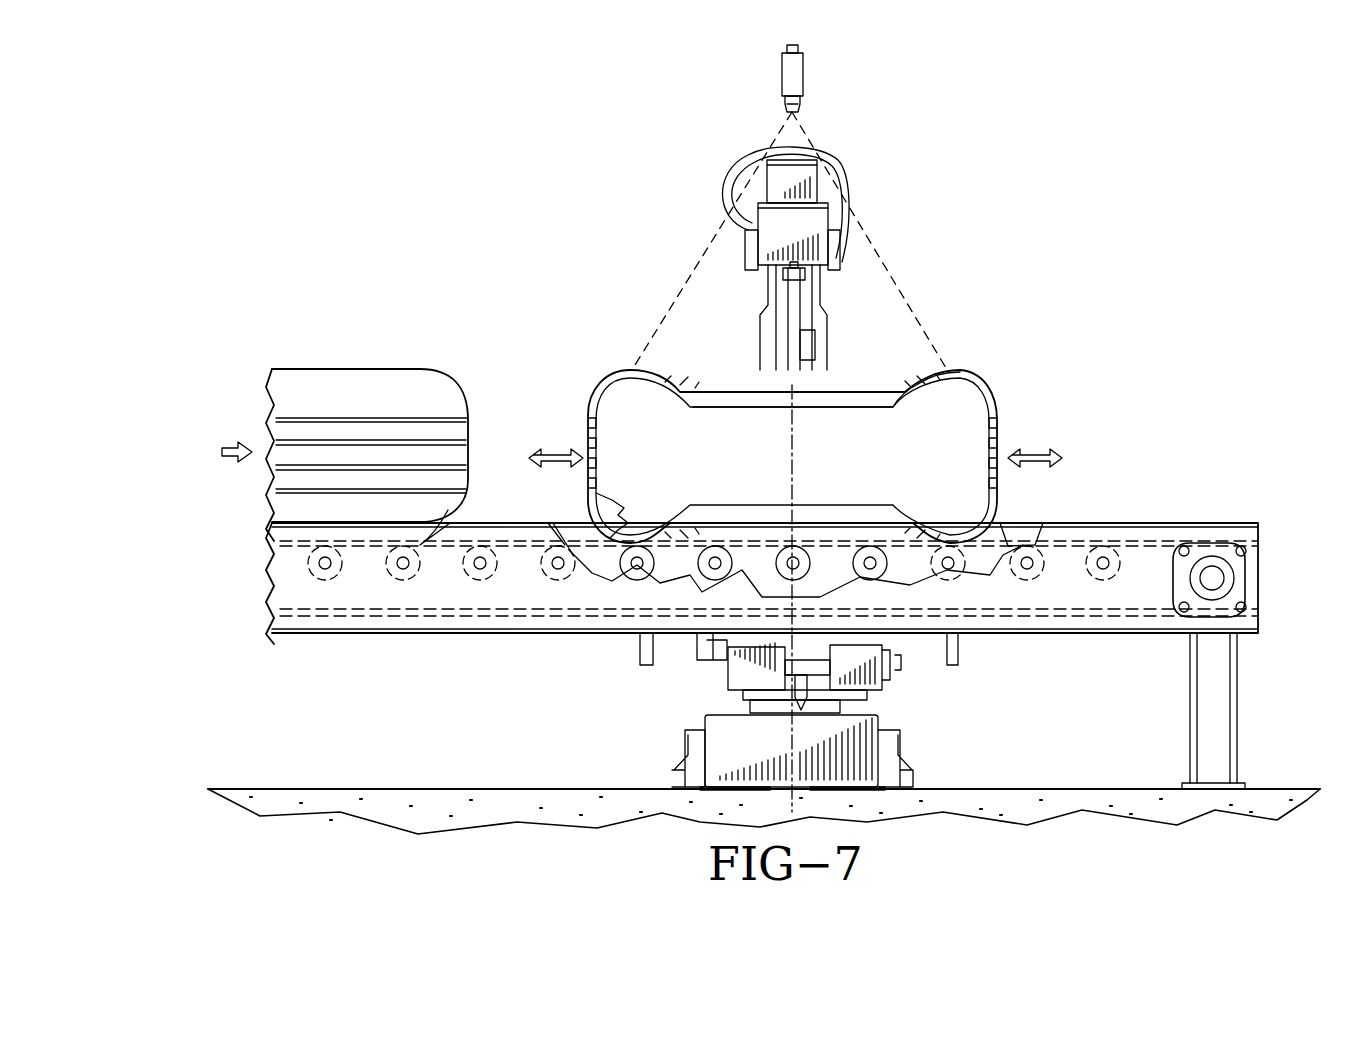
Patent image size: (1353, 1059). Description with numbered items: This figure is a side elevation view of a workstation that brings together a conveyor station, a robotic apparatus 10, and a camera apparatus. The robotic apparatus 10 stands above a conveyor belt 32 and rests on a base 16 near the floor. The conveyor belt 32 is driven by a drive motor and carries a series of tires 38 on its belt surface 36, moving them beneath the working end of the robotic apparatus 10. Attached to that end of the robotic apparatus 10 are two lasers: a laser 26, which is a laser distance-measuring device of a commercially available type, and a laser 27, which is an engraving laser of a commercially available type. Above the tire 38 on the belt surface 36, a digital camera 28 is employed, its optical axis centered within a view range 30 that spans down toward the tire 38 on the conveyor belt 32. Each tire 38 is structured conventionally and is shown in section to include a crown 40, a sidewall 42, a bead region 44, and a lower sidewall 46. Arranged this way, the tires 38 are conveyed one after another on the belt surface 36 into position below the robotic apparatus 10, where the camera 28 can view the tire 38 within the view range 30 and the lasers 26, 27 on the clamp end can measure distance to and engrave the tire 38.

The robotic apparatus 10 is at (666, 146).
The base 16 is at (748, 772).
The laser 26 is at (802, 232).
The laser 27 is at (794, 182).
The digital camera 28 is at (795, 77).
The view range 30 is at (770, 132).
The conveyor belt 32 is at (1080, 642).
The belt surface 36 is at (1005, 540).
The tire 38 is at (458, 386).
The crown 40 is at (1000, 428).
The sidewall 42 is at (954, 374).
The bead region 44 is at (895, 408).
The lower sidewall 46 is at (900, 392).